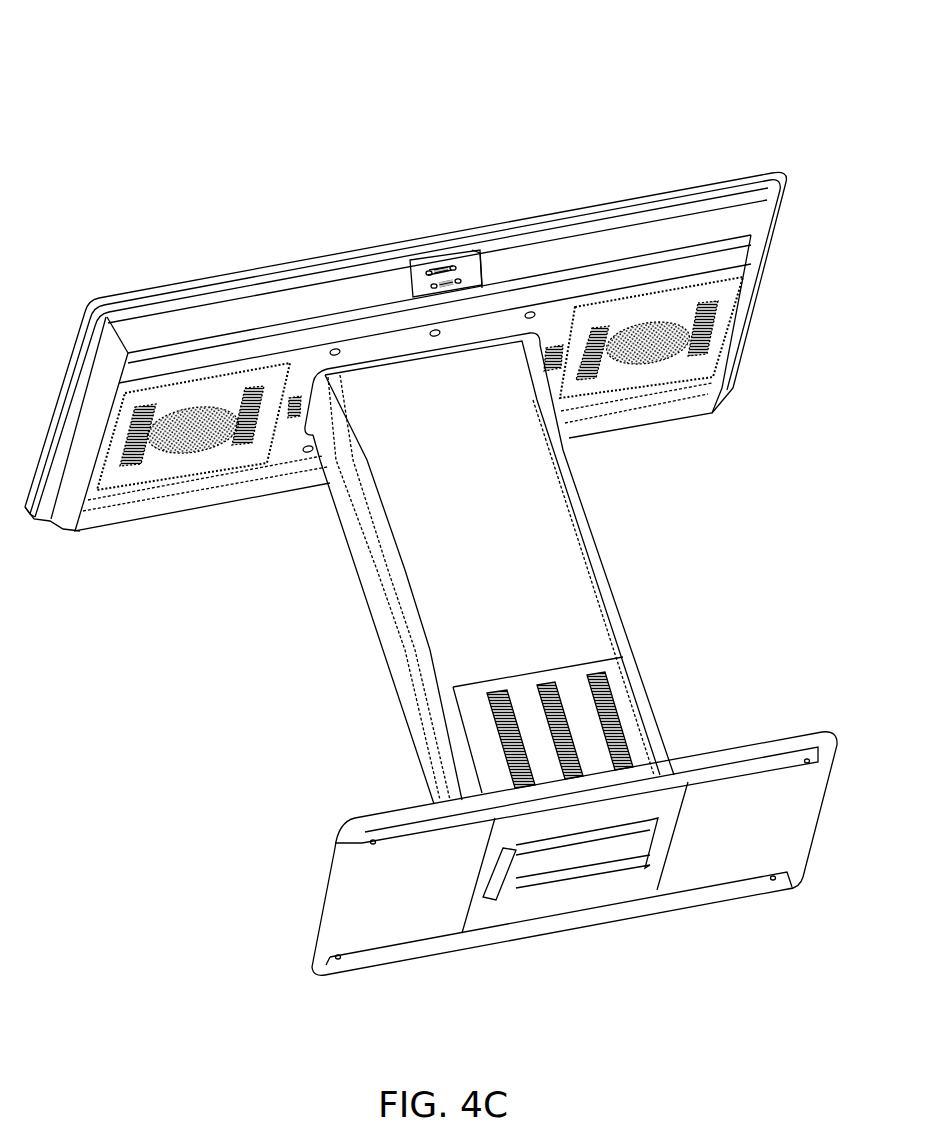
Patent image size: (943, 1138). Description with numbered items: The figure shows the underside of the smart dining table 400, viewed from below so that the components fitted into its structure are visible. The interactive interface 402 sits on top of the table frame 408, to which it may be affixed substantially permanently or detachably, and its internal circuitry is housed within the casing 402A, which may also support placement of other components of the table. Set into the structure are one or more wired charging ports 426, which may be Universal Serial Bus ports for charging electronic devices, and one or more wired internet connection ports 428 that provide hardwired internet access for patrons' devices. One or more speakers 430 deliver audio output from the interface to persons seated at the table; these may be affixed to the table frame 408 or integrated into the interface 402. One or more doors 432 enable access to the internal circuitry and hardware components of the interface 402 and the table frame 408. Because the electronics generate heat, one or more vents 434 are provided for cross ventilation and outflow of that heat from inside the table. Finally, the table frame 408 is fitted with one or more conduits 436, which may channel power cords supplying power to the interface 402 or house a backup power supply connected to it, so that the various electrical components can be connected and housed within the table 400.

The smart dining table 400 is at (698, 51).
The interactive interface 402 is at (103, 295).
The casing 402A is at (65, 508).
The table frame 408 is at (420, 617).
The wired charging ports 426 is at (427, 272).
The wired internet connection ports 428 is at (459, 280).
The speakers 430 is at (300, 416).
The doors 432 is at (210, 457).
The vents 434 is at (145, 408).
The conduits 436 is at (573, 857).